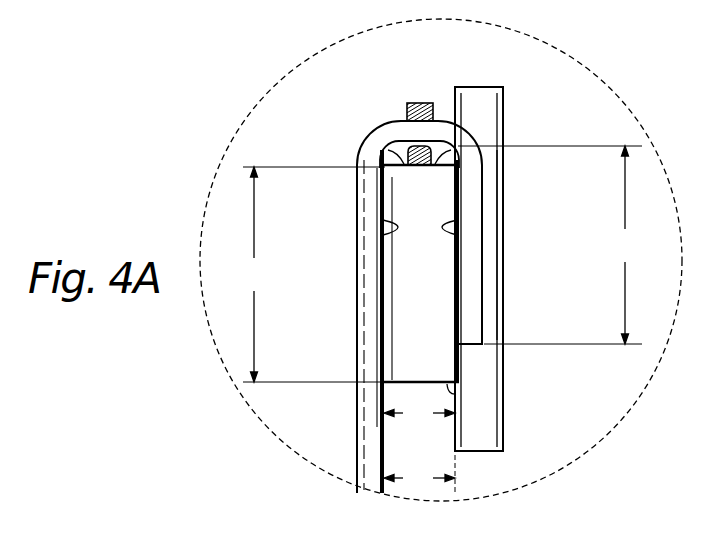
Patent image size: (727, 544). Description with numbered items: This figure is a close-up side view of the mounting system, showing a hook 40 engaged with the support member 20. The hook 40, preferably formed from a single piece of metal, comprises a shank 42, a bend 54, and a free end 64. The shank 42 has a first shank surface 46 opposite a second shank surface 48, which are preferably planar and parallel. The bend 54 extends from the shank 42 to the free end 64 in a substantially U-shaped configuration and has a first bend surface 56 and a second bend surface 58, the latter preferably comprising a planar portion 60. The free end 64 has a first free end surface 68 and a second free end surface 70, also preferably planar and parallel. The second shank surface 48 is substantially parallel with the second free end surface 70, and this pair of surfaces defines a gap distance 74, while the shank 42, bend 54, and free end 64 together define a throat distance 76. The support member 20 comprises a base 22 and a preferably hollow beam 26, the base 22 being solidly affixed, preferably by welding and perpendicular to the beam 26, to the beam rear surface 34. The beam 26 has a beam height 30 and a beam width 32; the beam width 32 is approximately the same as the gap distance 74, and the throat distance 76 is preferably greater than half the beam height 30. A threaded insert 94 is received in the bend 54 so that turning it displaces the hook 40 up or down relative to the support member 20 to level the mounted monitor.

The support member 20 is at (512, 431).
The base 22 is at (480, 417).
The beam 26 is at (435, 281).
The beam height 30 is at (345, 274).
The beam width 32 is at (419, 413).
The beam rear surface 34 is at (462, 375).
The hook 40 is at (350, 401).
The shank 42 is at (366, 288).
The first shank surface 46 is at (356, 336).
The second shank surface 48 is at (393, 234).
The bend 54 is at (376, 129).
The first bend surface 56 is at (397, 120).
The second bend surface 58 is at (380, 168).
The planar portion 60 is at (459, 147).
The free end 64 is at (471, 194).
The first free end surface 68 is at (487, 272).
The second free end surface 70 is at (455, 222).
The gap distance 74 is at (419, 474).
The throat distance 76 is at (550, 245).
The threaded insert 94 is at (413, 103).